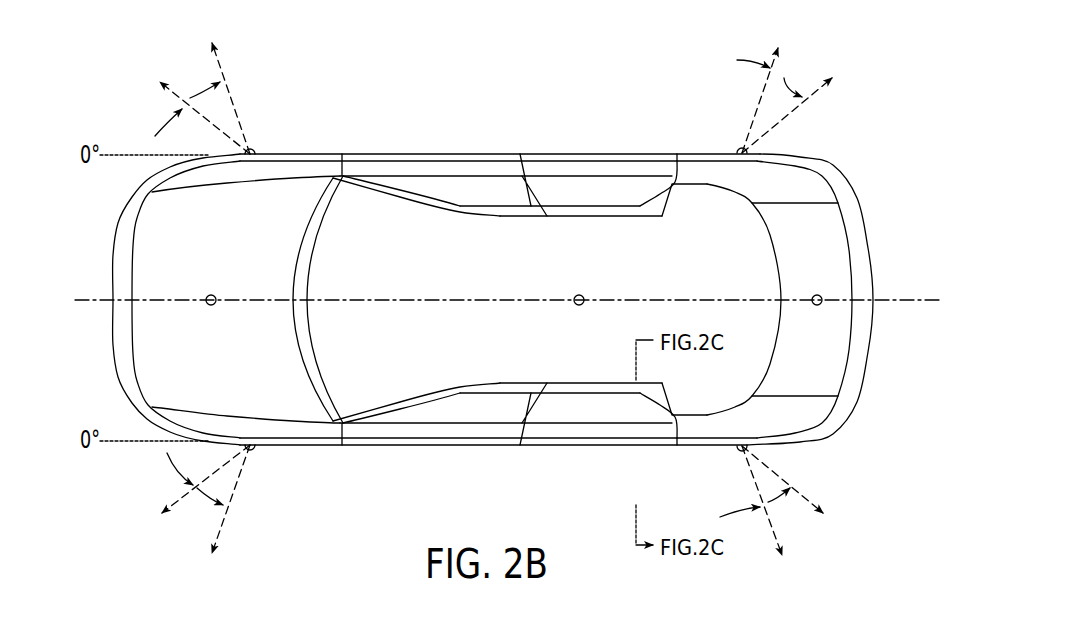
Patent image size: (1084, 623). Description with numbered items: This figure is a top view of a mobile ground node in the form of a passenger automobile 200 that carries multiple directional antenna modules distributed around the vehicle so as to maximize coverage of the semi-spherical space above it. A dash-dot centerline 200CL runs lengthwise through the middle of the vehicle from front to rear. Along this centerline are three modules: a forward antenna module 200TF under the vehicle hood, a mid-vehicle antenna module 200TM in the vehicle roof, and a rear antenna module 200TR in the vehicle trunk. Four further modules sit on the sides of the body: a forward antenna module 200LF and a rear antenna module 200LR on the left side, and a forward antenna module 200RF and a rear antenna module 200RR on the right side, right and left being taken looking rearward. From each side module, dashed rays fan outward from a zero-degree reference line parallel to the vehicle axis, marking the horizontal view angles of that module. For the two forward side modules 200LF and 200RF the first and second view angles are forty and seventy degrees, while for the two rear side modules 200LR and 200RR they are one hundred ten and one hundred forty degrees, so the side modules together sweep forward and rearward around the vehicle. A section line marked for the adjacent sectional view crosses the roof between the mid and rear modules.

The automobile 200 is at (158, 222).
The vehicle centerline 200CL is at (83, 300).
The forward left antenna module 200LF is at (255, 152).
The rear left antenna module 200LR is at (739, 150).
The forward right antenna module 200RF is at (255, 448).
The rear right antenna module 200RR is at (740, 450).
The forward antenna module 200TF is at (211, 295).
The mid-vehicle antenna module 200TM is at (581, 296).
The rear antenna module 200TR is at (818, 295).